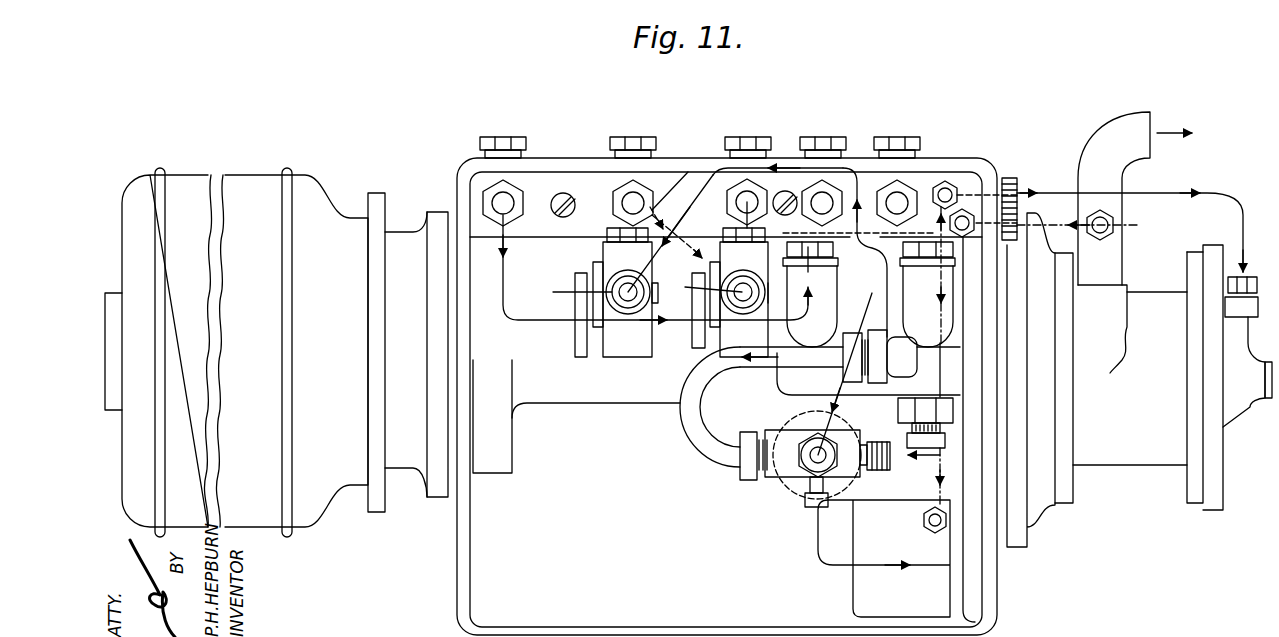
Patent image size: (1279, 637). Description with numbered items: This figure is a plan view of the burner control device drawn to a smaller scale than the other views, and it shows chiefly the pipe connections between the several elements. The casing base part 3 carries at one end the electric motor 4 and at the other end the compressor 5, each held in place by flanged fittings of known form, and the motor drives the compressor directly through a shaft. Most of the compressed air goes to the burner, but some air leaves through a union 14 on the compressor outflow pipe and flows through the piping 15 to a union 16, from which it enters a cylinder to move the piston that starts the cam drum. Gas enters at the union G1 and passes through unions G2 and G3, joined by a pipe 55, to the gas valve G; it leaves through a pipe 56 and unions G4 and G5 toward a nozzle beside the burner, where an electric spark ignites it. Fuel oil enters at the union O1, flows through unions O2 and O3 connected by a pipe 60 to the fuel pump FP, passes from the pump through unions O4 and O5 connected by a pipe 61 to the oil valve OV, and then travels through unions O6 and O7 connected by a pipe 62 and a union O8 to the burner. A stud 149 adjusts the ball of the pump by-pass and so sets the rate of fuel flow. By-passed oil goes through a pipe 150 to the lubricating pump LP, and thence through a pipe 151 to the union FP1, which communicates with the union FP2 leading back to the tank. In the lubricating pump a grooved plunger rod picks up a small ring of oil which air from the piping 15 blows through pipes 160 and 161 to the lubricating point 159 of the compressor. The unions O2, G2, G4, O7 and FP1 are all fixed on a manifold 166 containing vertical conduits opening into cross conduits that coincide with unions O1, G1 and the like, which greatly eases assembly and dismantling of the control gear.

The base part 3 is at (603, 635).
The electric motor 4 is at (236, 352).
The compressor 5 is at (1172, 377).
The union 14 is at (1104, 198).
The piping 15 is at (935, 481).
The union 16 is at (921, 525).
The pipe 55 is at (704, 257).
The pipe 56 is at (757, 275).
The pipe 60 is at (576, 403).
The pipe 61 is at (790, 165).
The pipe 62 is at (670, 232).
The stud 149 is at (930, 440).
The pipe 150 is at (687, 428).
The pipe 151 is at (842, 388).
The lubricating point 159 is at (1243, 285).
The pipe 160 is at (887, 563).
The pipe 161 is at (1208, 188).
The manifold 166 is at (565, 182).
The union O1 is at (520, 136).
The union O2 is at (513, 200).
The union O3 is at (823, 250).
The union O4 is at (923, 250).
The union O5 is at (569, 298).
The union O6 is at (655, 267).
The union O7 is at (822, 200).
The union O8 is at (822, 145).
The union G1 is at (633, 102).
The union G2 is at (613, 200).
The union G3 is at (702, 296).
The union G4 is at (745, 200).
The union G5 is at (748, 134).
The gas valve G is at (730, 292).
The oil valve OV is at (616, 292).
The lubricating pump LP is at (783, 480).
The fuel pump FP is at (867, 374).
The union FP1 is at (887, 237).
The union FP2 is at (898, 145).